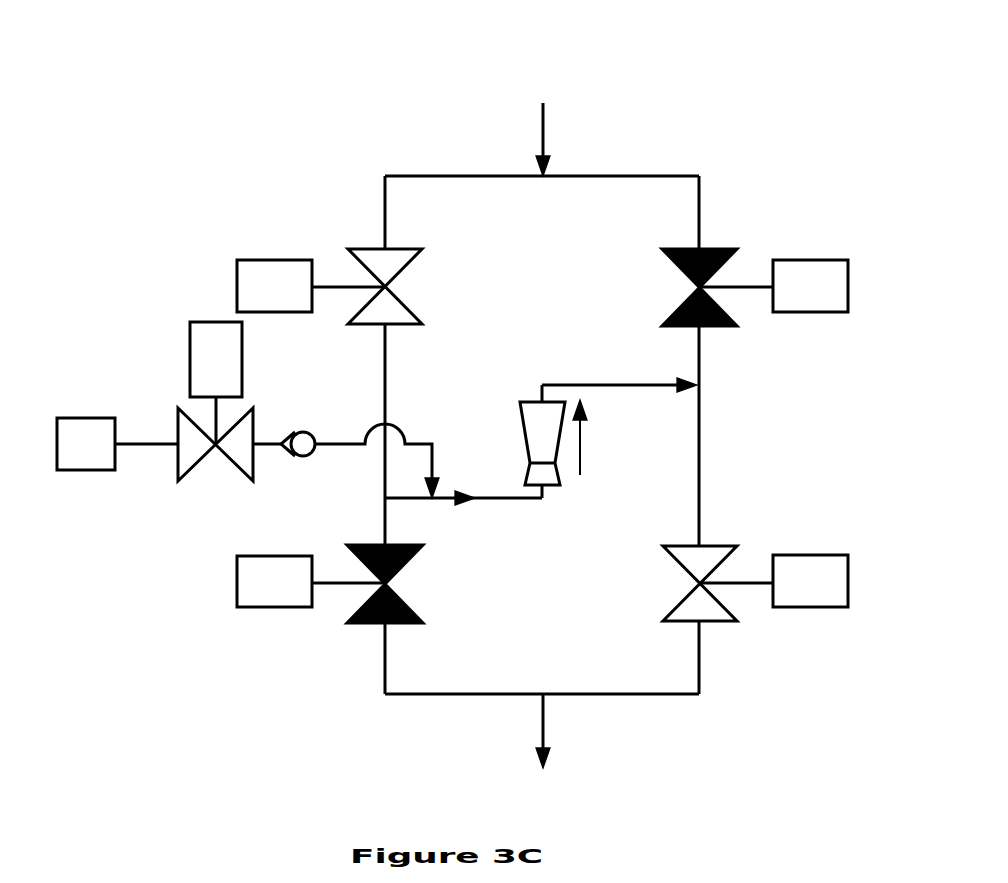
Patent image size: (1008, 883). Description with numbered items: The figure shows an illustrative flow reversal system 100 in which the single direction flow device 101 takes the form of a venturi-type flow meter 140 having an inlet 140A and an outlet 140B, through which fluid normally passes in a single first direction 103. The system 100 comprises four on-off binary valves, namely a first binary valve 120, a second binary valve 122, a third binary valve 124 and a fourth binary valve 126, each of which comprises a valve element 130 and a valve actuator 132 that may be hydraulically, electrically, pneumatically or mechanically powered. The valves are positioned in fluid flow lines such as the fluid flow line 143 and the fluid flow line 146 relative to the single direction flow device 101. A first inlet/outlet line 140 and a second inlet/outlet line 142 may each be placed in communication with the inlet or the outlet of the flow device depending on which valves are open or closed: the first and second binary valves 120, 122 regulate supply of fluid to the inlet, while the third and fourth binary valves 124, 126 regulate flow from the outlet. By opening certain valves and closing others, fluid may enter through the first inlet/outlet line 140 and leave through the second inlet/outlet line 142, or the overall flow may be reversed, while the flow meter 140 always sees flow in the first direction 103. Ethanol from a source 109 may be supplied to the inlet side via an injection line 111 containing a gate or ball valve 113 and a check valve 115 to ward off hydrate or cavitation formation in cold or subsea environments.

The flow reversal system 100 is at (316, 85).
The single direction flow device 101 is at (562, 351).
The first direction 103 is at (582, 442).
The source 109 is at (88, 438).
The injection line 111 is at (342, 440).
The gate or ball valve 113 is at (210, 470).
The check valve 115 is at (288, 414).
The first binary valve 120 is at (305, 224).
The second binary valve 122 is at (305, 668).
The third binary valve 124 is at (802, 223).
The fourth binary valve 126 is at (753, 641).
The valve element 130 is at (700, 557).
The valve actuator 132 is at (805, 575).
The flow meter 140 is at (545, 128).
The inlet 140A is at (543, 498).
The outlet 140B is at (542, 397).
The second inlet/outlet line 142 is at (545, 712).
The fluid flow line 143 is at (617, 176).
The fluid flow line 146 is at (668, 697).